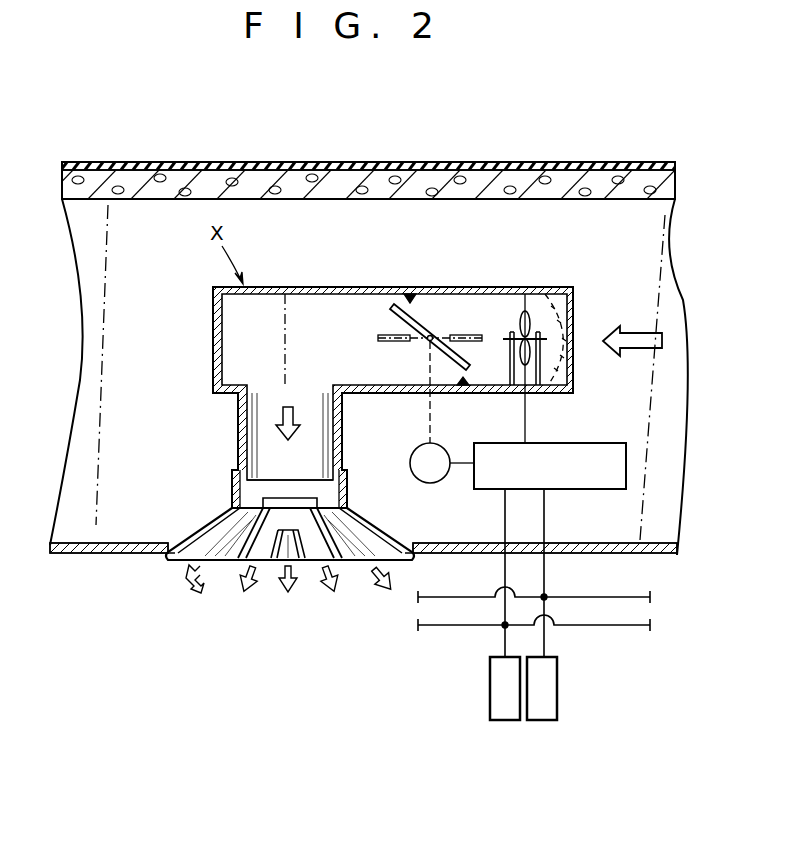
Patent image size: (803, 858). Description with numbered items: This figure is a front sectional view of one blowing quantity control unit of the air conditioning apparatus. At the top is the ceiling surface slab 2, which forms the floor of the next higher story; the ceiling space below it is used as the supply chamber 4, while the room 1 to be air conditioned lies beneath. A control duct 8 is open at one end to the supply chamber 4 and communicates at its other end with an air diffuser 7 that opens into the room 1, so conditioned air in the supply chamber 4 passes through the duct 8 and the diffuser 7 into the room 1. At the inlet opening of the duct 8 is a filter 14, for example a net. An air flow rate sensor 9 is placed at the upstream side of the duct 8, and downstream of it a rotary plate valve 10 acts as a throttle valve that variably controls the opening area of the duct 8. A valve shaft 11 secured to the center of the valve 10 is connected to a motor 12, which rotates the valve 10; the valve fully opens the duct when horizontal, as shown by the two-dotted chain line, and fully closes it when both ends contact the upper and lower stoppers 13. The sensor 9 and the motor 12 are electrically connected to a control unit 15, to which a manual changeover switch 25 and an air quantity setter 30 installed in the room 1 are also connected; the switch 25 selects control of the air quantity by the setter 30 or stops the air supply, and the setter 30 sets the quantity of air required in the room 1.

The room 1 is at (235, 713).
The ceiling surface slab 2 is at (225, 180).
The supply chamber 4 is at (165, 394).
The air diffuser 7 is at (240, 562).
The control duct 8 is at (313, 287).
The air flow rate sensor 9 is at (525, 310).
The rotary plate valve 10 is at (393, 310).
The valve shaft 11 is at (432, 338).
The motor 12 is at (413, 472).
The stoppers 13 is at (410, 293).
The filter 14 is at (565, 303).
The control unit 15 is at (573, 443).
The manual changeover switch 25 is at (490, 694).
The air quantity setter 30 is at (557, 691).